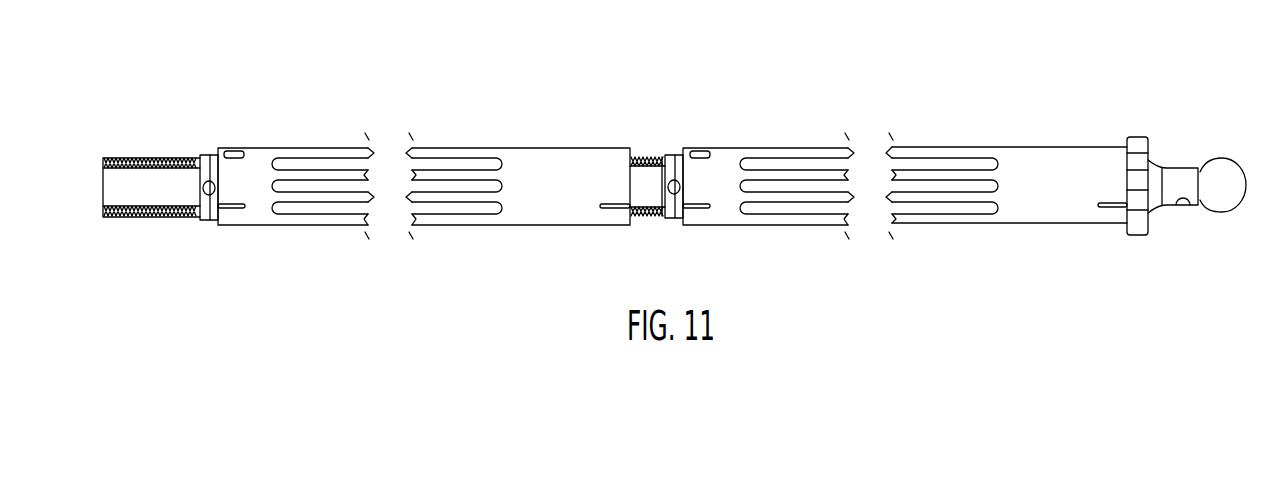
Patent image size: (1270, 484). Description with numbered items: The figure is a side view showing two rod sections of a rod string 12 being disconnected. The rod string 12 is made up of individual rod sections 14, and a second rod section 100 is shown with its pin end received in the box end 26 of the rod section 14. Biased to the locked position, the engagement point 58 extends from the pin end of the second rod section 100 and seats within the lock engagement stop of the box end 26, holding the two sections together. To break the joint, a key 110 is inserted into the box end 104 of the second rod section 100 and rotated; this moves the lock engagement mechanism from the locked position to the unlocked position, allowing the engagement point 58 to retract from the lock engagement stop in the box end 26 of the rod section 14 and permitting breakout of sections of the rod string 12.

The rod string 12 is at (766, 72).
The rod section 14 is at (518, 147).
The box end 26 is at (632, 148).
The engagement point 58 is at (682, 219).
The second rod section 100 is at (994, 147).
The second box end 104 is at (1114, 147).
The key 110 is at (1181, 168).